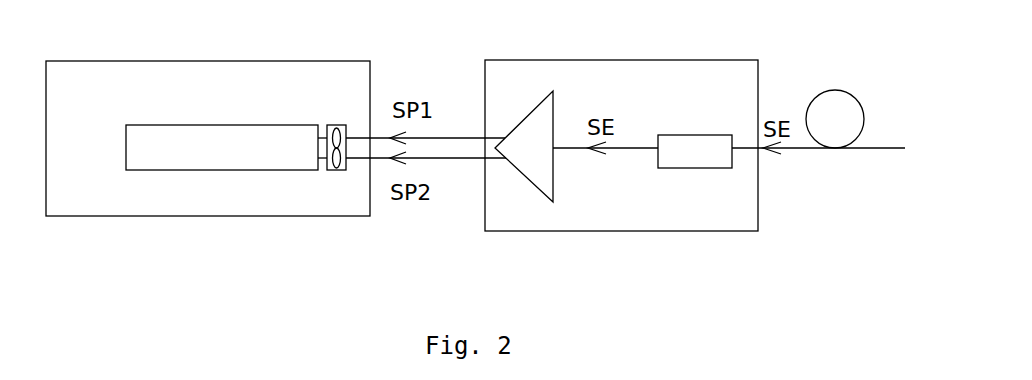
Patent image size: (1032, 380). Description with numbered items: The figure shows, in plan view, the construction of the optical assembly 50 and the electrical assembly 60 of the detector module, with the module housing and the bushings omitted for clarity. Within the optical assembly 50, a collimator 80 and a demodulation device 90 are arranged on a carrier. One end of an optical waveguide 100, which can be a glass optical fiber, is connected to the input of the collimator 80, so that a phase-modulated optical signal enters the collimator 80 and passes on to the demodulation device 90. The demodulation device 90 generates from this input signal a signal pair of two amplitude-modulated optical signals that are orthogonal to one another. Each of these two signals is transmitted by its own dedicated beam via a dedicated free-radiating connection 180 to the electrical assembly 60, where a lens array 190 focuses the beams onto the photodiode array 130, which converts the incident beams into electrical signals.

The optical assembly 50 is at (623, 60).
The electrical assembly 60 is at (147, 61).
The collimator 80 is at (695, 151).
The demodulation device 90 is at (524, 146).
The optical waveguide 100 is at (835, 138).
The photodiode array 130 is at (222, 147).
The free-radiating connection 180 is at (468, 137).
The lens array 190 is at (337, 125).